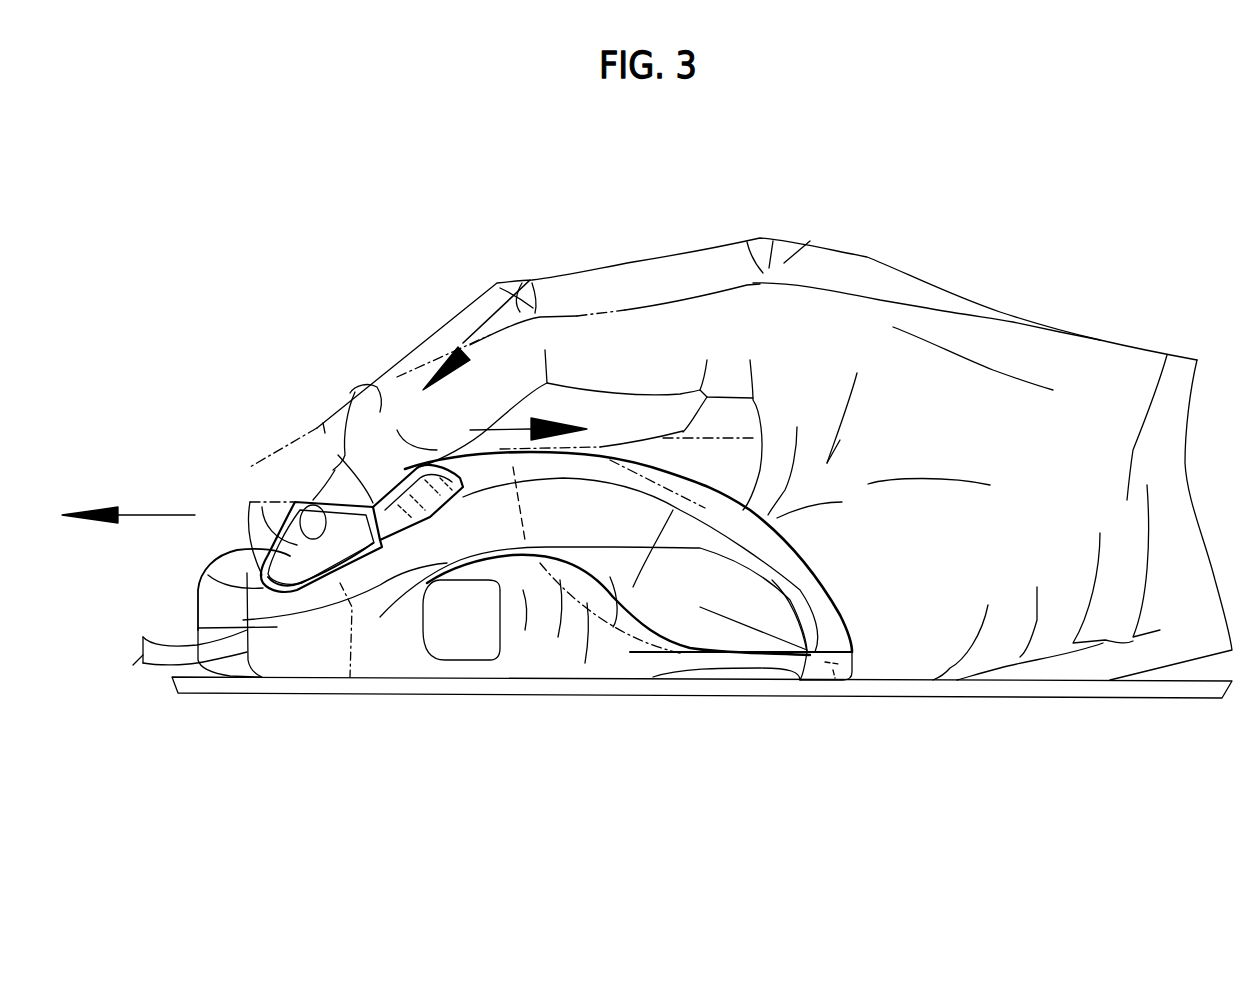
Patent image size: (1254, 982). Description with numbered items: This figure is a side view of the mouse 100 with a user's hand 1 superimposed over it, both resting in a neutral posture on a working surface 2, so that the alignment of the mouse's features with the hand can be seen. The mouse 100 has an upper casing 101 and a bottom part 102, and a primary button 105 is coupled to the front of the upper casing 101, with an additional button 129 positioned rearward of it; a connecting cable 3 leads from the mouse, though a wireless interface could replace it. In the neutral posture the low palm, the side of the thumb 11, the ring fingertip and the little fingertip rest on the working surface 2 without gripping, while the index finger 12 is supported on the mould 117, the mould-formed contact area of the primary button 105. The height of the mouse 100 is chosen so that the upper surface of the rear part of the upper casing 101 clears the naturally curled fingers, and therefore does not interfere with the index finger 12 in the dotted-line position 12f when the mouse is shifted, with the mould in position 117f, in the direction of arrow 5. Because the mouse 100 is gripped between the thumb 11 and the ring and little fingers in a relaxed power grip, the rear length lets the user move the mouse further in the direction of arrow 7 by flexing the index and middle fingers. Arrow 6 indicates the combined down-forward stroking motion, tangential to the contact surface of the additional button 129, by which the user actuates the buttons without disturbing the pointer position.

The hand 1 is at (1012, 252).
The working surface 2 is at (900, 683).
The connecting cable 3 is at (158, 657).
The arrow 5 is at (128, 501).
The arrow 6 is at (476, 322).
The arrow 7 is at (528, 412).
The thumb 11 is at (473, 637).
The index finger 12 is at (335, 470).
The position of index finger 12f is at (268, 458).
The mouse 100 is at (520, 573).
The upper casing 101 is at (640, 530).
The bottom part 102 is at (526, 672).
The primary button 105 is at (274, 565).
The mould 117 is at (213, 556).
The position of mould 117f is at (245, 523).
The additional button 129 is at (392, 537).